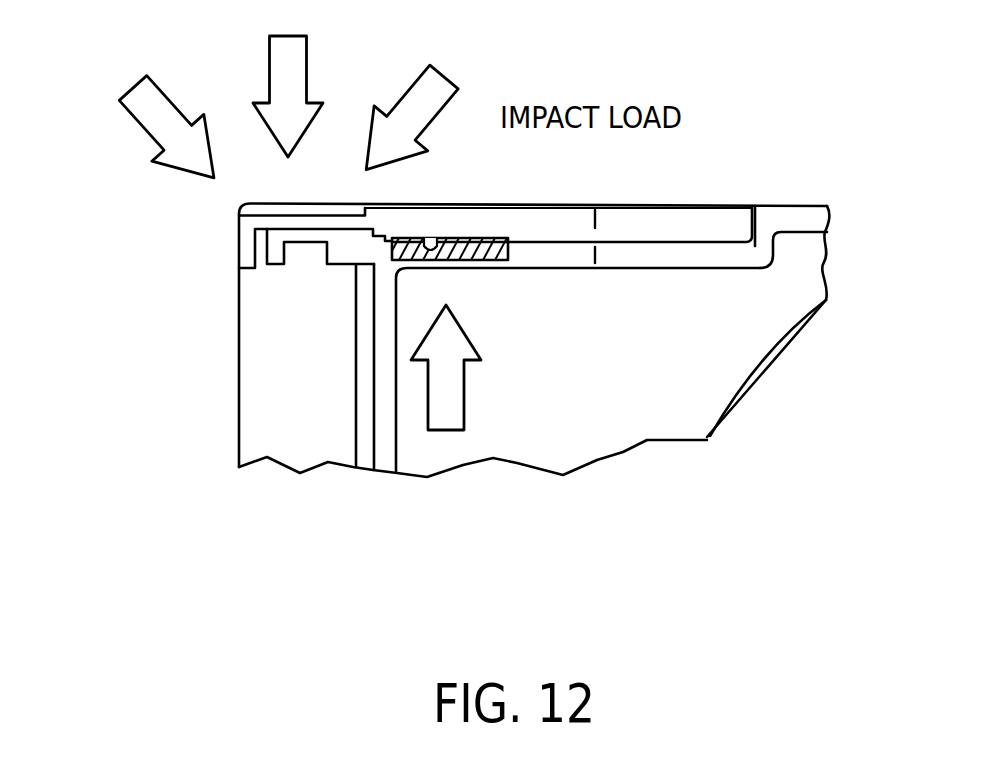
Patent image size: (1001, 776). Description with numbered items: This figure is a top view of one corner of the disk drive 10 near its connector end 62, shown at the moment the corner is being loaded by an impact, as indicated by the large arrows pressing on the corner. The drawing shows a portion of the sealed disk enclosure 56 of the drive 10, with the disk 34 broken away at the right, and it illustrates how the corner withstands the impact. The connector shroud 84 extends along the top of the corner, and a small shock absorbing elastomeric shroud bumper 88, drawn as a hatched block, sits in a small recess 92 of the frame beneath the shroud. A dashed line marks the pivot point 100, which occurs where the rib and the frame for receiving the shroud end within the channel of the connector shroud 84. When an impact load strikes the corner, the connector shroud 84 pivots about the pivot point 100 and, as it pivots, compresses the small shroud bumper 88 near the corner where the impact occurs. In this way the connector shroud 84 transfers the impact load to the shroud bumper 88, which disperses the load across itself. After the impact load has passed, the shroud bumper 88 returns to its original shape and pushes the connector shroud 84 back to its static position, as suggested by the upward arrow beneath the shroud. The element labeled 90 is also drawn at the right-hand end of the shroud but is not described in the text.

The disk drive 10 is at (133, 269).
The disk 34 is at (773, 363).
The sealed disk enclosure 56 is at (620, 430).
The connector end 62 is at (270, 412).
The connector shroud 84 is at (657, 223).
The shroud bumper 88 is at (484, 238).
The flange 90 is at (754, 247).
The small recess 92 is at (442, 238).
The pivot point 100 is at (600, 255).